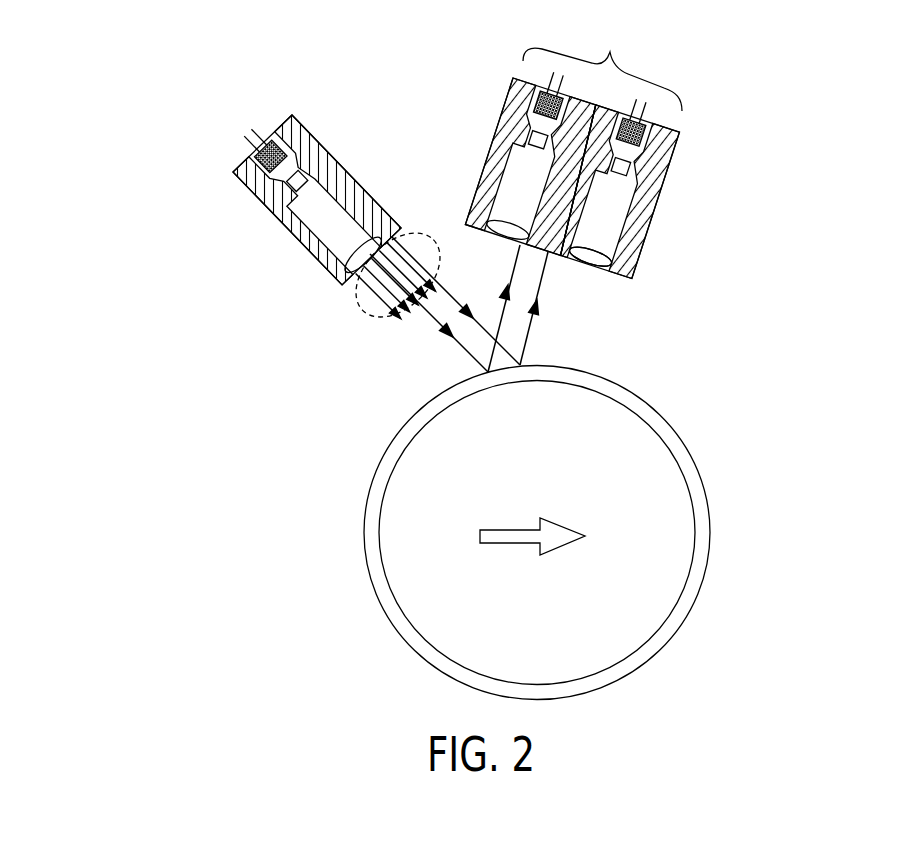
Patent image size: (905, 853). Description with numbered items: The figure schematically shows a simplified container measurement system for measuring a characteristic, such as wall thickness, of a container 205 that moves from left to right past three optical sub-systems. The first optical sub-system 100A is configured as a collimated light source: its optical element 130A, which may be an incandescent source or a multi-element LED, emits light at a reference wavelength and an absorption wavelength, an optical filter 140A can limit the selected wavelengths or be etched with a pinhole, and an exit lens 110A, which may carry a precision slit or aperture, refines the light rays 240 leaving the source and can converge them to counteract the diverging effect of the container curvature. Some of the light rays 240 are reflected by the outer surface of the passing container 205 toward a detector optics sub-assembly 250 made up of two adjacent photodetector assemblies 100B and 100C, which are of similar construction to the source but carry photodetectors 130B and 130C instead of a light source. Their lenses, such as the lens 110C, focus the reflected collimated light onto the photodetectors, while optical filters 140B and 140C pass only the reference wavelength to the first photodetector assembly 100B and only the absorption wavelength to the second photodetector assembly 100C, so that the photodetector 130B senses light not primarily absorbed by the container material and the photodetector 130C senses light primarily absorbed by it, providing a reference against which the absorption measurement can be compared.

The first optical sub-system 100A is at (230, 137).
The first photodetector assembly 100B is at (463, 98).
The second photodetector assembly 100C is at (669, 183).
The optical element 130A is at (267, 176).
The photodetector 130B is at (528, 120).
The photodetector 130C is at (655, 130).
The optical filter 140A is at (312, 212).
The optical filter 140B is at (525, 157).
The optical filter 140C is at (630, 187).
The exit lens 110A is at (360, 265).
The lens 110C is at (622, 262).
The light rays 240 is at (372, 306).
The detector optics sub-assembly 250 is at (602, 66).
The container 205 is at (352, 592).